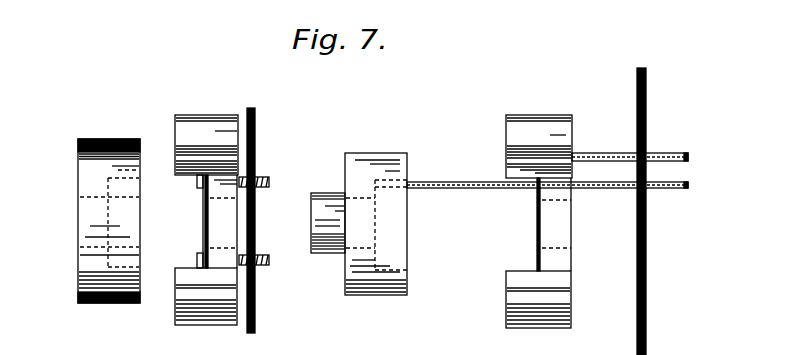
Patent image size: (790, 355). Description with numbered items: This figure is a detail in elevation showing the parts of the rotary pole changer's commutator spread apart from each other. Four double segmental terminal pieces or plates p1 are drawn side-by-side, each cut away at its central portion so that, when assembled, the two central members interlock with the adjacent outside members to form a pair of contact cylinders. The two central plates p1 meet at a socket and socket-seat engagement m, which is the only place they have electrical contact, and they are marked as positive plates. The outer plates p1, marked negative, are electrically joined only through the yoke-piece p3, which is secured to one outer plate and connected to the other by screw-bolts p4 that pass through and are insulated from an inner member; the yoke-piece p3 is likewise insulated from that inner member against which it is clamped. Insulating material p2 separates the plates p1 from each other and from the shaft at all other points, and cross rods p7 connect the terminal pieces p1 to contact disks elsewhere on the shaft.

The double segmental terminal pieces or plates p1 is at (89, 139).
The insulating material p2 is at (258, 141).
The yoke-piece p3 is at (203, 239).
The screw-bolts p4 is at (270, 179).
The cross rods p7 is at (688, 158).
The socket and socket-seat engagement m is at (332, 258).